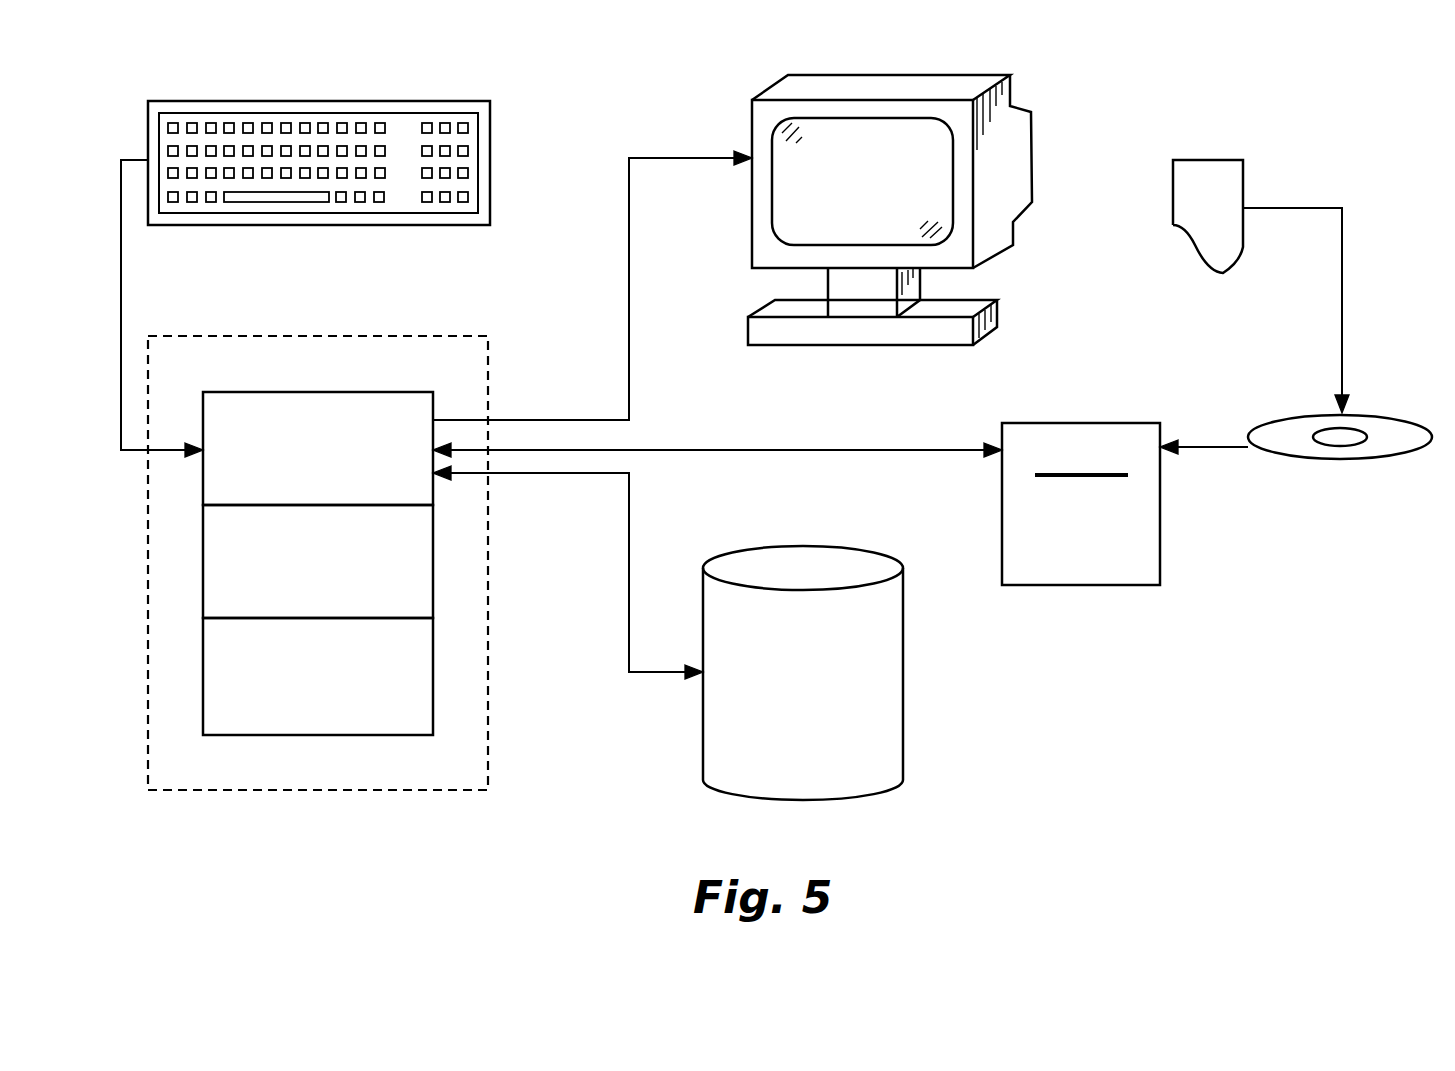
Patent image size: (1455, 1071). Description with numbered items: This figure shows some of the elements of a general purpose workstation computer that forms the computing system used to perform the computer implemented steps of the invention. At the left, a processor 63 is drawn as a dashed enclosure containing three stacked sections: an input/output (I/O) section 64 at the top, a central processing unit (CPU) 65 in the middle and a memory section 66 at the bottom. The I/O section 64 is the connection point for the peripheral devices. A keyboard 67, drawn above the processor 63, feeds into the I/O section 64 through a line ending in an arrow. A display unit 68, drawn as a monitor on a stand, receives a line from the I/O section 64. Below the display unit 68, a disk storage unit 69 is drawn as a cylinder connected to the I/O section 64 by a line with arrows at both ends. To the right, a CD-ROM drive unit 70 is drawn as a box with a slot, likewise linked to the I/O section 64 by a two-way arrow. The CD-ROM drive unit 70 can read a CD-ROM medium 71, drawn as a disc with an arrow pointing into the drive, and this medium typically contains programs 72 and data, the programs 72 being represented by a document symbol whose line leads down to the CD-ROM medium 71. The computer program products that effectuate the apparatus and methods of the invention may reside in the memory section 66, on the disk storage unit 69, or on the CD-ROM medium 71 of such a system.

The processor 63 is at (435, 336).
The input/output (I/O) section 64 is at (297, 397).
The central processing unit (CPU) 65 is at (433, 580).
The memory section 66 is at (433, 718).
The keyboard 67 is at (467, 103).
The display unit 68 is at (960, 85).
The disk storage unit 69 is at (903, 647).
The CD-ROM drive unit 70 is at (1032, 422).
The CD-ROM medium 71 is at (1313, 420).
The programs 72 is at (1187, 168).